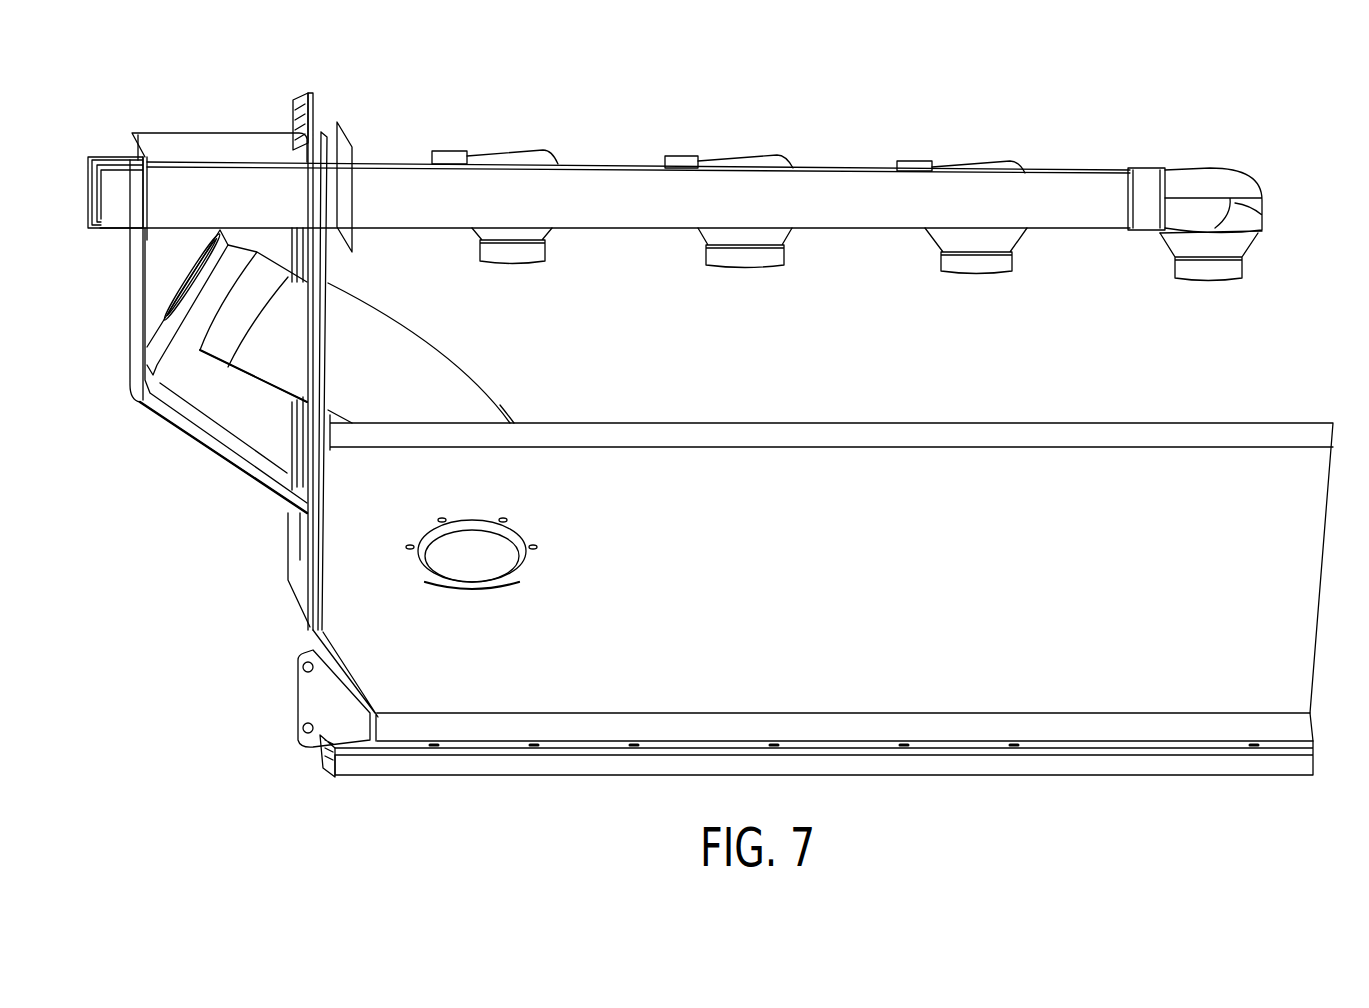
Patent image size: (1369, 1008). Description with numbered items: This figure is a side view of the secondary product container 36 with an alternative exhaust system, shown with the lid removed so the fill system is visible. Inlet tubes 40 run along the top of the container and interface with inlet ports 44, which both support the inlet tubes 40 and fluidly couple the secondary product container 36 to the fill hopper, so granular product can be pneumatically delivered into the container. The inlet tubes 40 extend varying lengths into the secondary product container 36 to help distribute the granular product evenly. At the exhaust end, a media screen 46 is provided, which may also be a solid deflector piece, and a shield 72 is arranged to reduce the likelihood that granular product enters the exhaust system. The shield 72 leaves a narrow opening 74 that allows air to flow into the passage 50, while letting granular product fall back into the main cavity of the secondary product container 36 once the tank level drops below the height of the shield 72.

The secondary product container 36 is at (257, 87).
The inlet tubes 40 is at (612, 165).
The inlet ports 44 is at (135, 158).
The media screen 46 is at (345, 128).
The passage 50 is at (250, 377).
The shield 72 is at (157, 330).
The narrow opening 74 is at (150, 377).